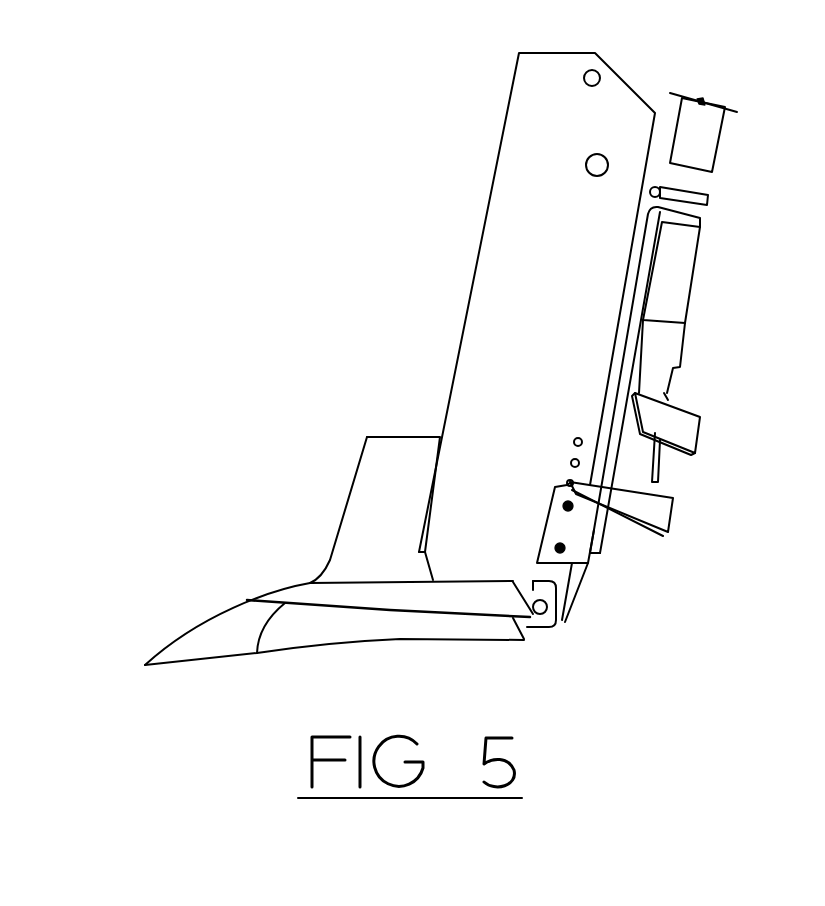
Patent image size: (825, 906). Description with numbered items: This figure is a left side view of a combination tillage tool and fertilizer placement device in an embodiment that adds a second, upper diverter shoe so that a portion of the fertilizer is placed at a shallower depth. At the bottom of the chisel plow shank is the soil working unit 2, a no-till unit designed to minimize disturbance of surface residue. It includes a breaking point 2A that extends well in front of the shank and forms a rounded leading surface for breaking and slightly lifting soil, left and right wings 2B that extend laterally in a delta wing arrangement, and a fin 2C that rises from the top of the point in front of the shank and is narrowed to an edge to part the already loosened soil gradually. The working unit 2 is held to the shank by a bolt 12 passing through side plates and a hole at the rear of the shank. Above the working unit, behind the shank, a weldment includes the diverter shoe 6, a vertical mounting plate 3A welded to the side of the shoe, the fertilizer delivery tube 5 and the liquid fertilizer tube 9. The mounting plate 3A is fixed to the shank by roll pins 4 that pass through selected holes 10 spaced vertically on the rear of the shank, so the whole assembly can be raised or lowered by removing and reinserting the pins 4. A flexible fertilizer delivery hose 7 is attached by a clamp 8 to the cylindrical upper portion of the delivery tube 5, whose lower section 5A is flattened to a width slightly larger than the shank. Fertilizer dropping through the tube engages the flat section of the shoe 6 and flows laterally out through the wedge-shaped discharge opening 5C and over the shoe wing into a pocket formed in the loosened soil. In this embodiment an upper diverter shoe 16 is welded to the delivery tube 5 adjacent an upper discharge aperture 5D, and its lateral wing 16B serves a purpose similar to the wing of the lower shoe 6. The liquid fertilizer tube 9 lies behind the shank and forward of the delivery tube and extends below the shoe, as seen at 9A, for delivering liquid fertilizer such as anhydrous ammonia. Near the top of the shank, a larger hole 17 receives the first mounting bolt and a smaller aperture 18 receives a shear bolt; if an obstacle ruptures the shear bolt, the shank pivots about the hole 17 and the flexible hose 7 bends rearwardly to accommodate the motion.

The soil working unit 2 is at (445, 640).
The breaking point 2A is at (198, 618).
The wings 2B is at (523, 640).
The fin 2C is at (352, 478).
The mounting plate 3A is at (588, 563).
The roll pins 4 is at (557, 546).
The fertilizer delivery tube 5 is at (693, 272).
The lower section of delivery tube 5A is at (685, 352).
The lateral discharge opening 5C is at (613, 483).
The upper discharge aperture 5D is at (667, 398).
The diverter shoe 6 is at (673, 517).
The fertilizer delivery hose 7 is at (718, 140).
The clamp 8 is at (710, 198).
The liquid fertilizer tube 9 is at (660, 213).
The lower end of liquid fertilizer tube 9A is at (600, 537).
The holes 10 is at (572, 461).
The bolt 12 is at (547, 615).
The upper diverter shoe 16 is at (702, 437).
The lateral wing 16B is at (683, 425).
The larger hole 17 is at (586, 162).
The smaller aperture 18 is at (600, 76).